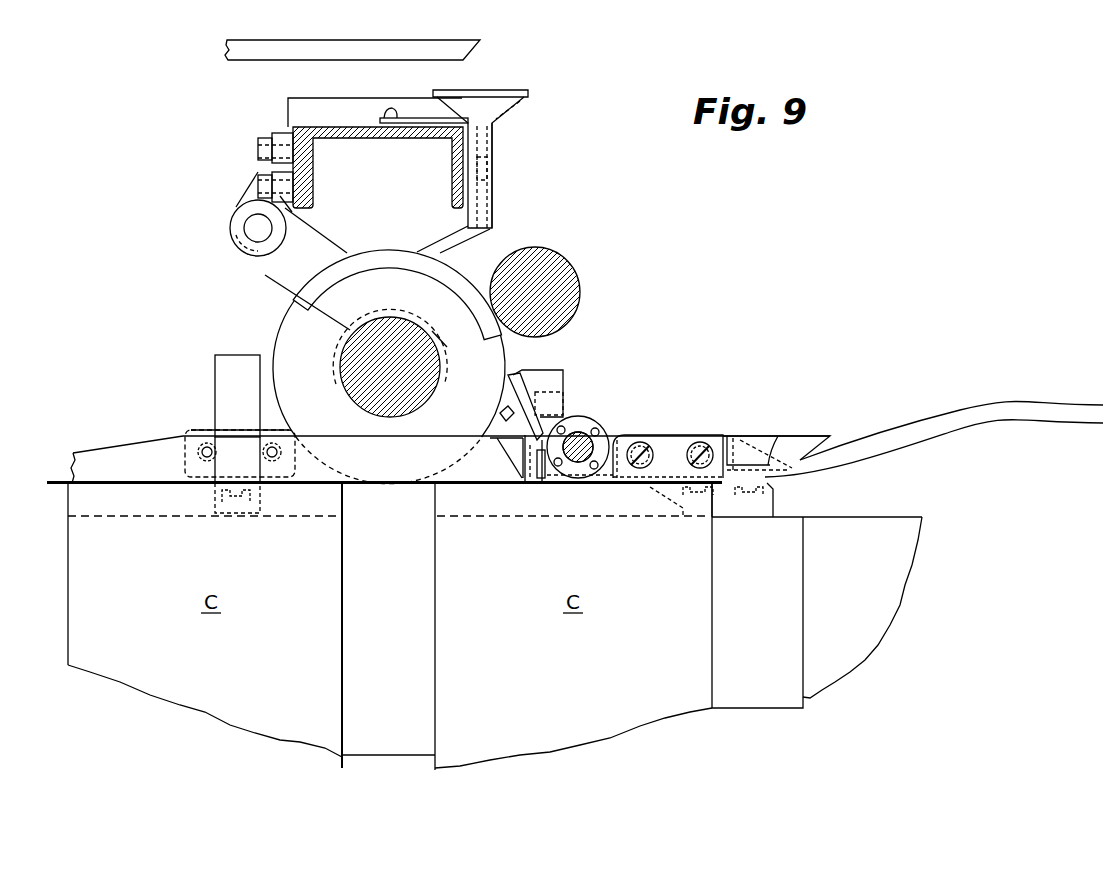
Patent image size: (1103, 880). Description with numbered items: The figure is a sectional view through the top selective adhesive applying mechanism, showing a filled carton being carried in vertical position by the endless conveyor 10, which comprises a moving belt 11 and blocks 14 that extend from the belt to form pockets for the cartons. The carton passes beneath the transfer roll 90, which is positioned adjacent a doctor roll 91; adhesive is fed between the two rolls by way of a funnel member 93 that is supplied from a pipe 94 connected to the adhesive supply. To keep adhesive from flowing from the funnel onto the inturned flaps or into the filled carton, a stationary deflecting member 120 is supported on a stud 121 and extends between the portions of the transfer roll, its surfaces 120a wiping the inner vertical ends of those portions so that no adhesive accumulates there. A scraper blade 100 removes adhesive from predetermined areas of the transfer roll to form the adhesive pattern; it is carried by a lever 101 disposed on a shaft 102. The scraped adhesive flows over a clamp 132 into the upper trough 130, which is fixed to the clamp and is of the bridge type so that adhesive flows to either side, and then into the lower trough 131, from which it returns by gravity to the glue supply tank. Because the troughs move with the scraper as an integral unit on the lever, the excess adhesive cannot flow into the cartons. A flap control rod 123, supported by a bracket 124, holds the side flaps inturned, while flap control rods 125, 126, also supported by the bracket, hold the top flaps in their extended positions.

The pipe 94 is at (429, 40).
The funnel member 93 is at (510, 106).
The stud 121 is at (254, 228).
The deflecting member 120 is at (263, 274).
The surfaces 120a is at (385, 255).
The transfer roll 90 is at (276, 328).
The doctor roll 91 is at (563, 262).
The scraper blade 100 is at (512, 373).
The lever 101 is at (515, 396).
The clamp 132 is at (528, 383).
The upper trough 130 is at (563, 380).
The shaft 102 is at (587, 428).
The flap control rod 123 is at (820, 437).
The flap control rod 125 is at (787, 440).
The flap control rod 126 is at (787, 440).
The bracket 124 is at (776, 505).
The lower trough 131 is at (532, 484).
The endless conveyor 10 is at (927, 644).
The moving belt 11 is at (899, 575).
The blocks 14 is at (433, 628).